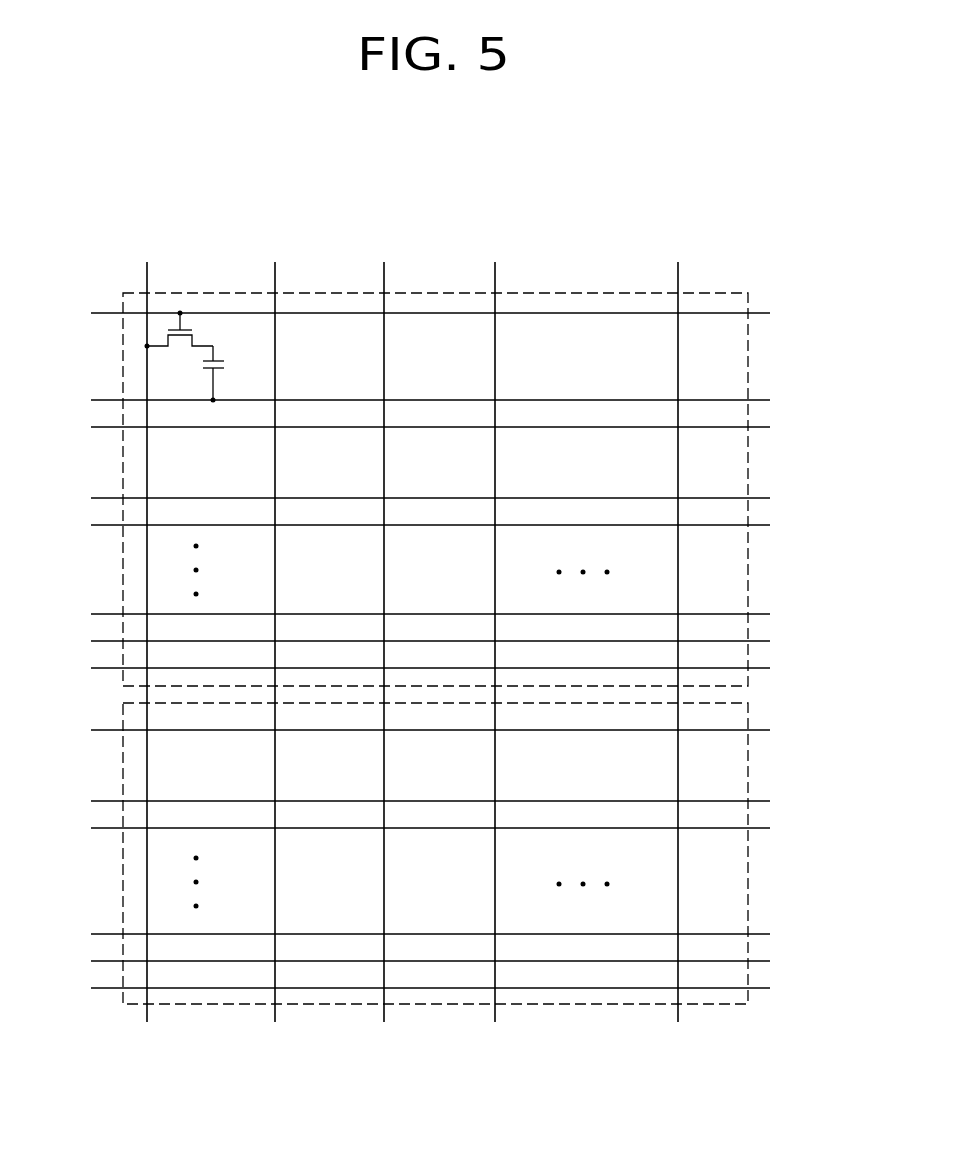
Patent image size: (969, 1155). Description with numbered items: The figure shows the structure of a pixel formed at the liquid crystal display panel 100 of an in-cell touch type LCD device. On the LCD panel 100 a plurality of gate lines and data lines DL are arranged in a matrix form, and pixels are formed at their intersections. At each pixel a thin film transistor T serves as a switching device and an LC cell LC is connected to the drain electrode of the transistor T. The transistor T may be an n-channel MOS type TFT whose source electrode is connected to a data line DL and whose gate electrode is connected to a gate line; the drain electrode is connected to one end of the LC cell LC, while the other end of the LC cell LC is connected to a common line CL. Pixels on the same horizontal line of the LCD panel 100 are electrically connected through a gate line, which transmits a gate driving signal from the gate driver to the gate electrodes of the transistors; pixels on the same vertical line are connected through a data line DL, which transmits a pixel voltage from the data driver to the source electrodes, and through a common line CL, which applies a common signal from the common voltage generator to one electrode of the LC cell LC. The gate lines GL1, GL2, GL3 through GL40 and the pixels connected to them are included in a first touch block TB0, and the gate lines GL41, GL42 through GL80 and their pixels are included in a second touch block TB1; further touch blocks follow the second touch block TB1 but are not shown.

The LCD panel 100 is at (767, 218).
The data line DL is at (412, 631).
The common line CL is at (416, 694).
The gate line GL1 is at (408, 313).
The gate line GL2 is at (408, 427).
The gate line GL3 is at (408, 525).
The gate line GL40 is at (402, 641).
The gate line GL41 is at (402, 730).
The gate line GL42 is at (402, 828).
The gate line GL80 is at (402, 961).
The thin film transistor T is at (165, 365).
The LC cell LC is at (200, 374).
The first touch block TB0 is at (748, 462).
The second touch block TB1 is at (748, 860).